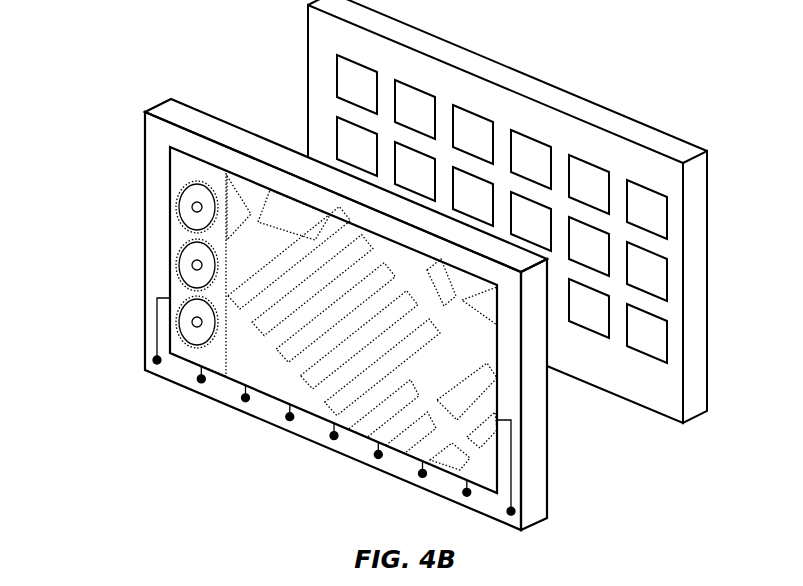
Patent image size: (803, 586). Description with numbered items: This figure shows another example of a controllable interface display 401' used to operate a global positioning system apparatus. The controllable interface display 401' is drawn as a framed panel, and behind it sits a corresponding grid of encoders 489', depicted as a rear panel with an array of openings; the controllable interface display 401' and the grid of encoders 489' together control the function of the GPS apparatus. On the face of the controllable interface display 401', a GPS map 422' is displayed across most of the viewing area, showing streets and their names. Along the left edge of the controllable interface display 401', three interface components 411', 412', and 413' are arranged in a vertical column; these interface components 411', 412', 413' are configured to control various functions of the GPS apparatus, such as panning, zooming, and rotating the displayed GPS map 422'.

The controllable interface display 401' is at (293, 314).
The interface component 411' is at (135, 197).
The interface component 412' is at (134, 255).
The interface component 413' is at (134, 309).
The GPS map 422' is at (341, 324).
The grid of encoders 489' is at (507, 211).